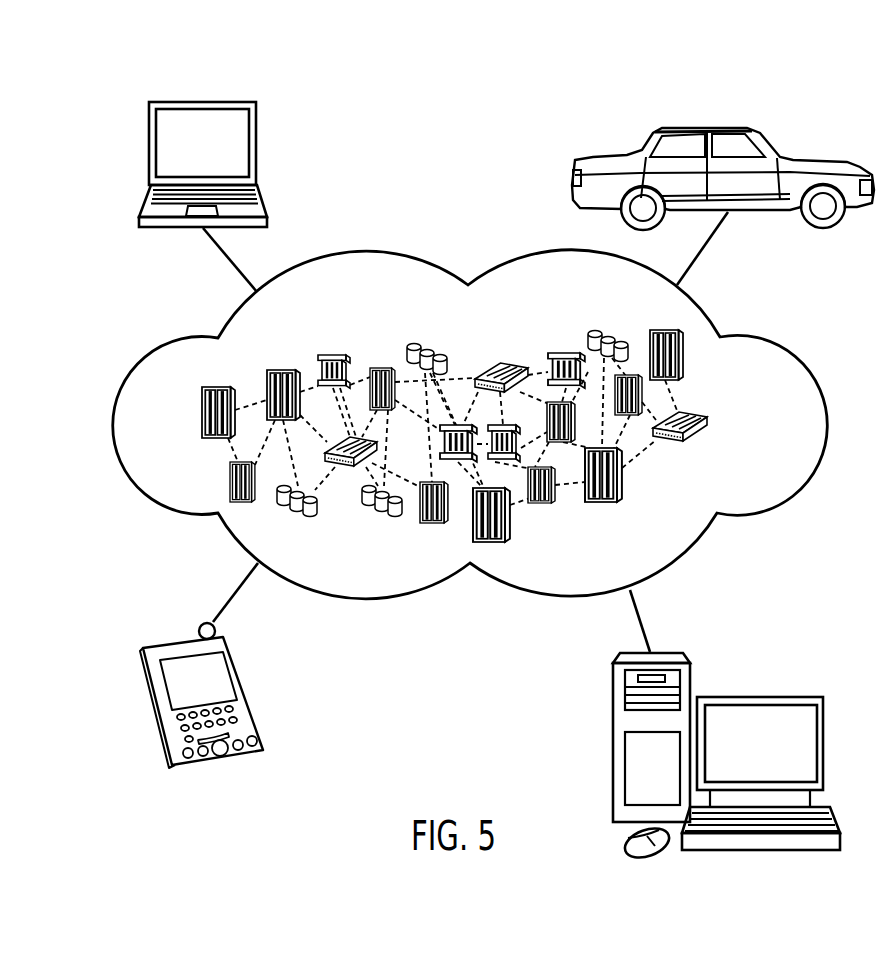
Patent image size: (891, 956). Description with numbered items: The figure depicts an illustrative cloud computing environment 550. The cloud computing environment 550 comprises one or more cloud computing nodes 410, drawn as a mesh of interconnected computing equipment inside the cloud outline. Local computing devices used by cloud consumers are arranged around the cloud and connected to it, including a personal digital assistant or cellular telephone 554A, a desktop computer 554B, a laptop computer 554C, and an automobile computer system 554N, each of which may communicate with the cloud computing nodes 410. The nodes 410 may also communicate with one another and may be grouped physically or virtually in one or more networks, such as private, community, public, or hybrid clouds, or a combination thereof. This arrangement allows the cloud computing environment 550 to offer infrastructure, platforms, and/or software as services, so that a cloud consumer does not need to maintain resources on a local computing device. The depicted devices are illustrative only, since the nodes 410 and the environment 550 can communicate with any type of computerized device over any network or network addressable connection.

The cloud computing environment 550 is at (772, 340).
The cloud computing node 410 is at (726, 429).
The personal digital assistant (PDA) or cellular telephone 554A is at (183, 637).
The desktop computer 554B is at (760, 695).
The laptop computer 554C is at (203, 101).
The automobile computer system 554N is at (702, 127).